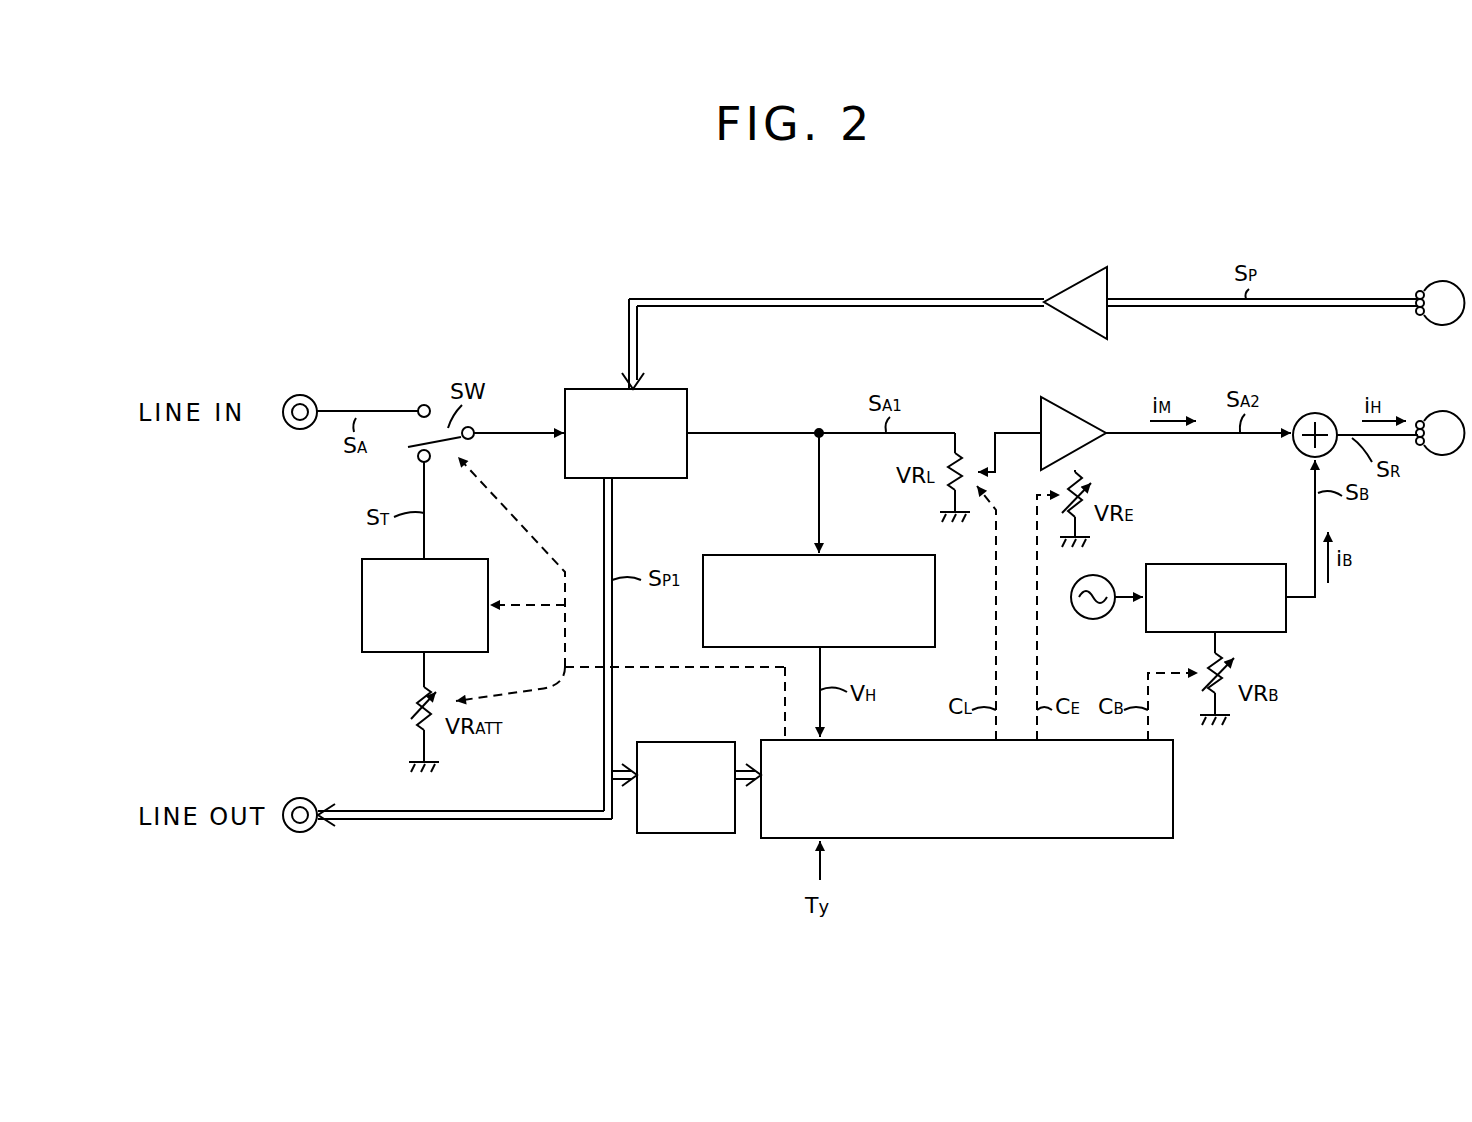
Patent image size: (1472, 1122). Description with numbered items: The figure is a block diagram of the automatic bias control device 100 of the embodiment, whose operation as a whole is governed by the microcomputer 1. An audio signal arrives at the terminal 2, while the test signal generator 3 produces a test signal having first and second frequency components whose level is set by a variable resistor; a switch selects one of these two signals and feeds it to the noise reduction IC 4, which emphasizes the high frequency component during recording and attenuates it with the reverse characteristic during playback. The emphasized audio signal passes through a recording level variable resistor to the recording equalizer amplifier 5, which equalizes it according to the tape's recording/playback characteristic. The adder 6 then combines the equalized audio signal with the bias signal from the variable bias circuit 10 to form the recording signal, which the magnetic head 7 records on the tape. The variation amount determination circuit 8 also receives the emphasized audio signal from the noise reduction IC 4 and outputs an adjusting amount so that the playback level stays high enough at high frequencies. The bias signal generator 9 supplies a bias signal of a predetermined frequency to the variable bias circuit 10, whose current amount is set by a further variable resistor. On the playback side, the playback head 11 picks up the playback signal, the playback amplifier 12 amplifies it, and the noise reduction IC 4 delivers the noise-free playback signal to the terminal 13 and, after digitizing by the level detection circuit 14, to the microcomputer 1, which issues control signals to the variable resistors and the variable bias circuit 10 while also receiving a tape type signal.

The automatic bias control device 100 is at (808, 250).
The microcomputer 1 is at (1060, 838).
The terminal 2 is at (306, 396).
The test signal generator 3 is at (362, 607).
The noise reduction IC 4 is at (687, 403).
The recording equalizer amplifier 5 is at (1073, 410).
The adder 6 is at (1320, 413).
The magnetic head 7 is at (1437, 410).
The variation amount determination circuit 8 is at (743, 555).
The bias signal generator 9 is at (1105, 578).
The variable bias circuit 10 is at (1232, 564).
The playback head 11 is at (1440, 280).
The playback amplifier 12 is at (1062, 290).
The terminal 13 is at (311, 798).
The level detection circuit 14 is at (690, 835).